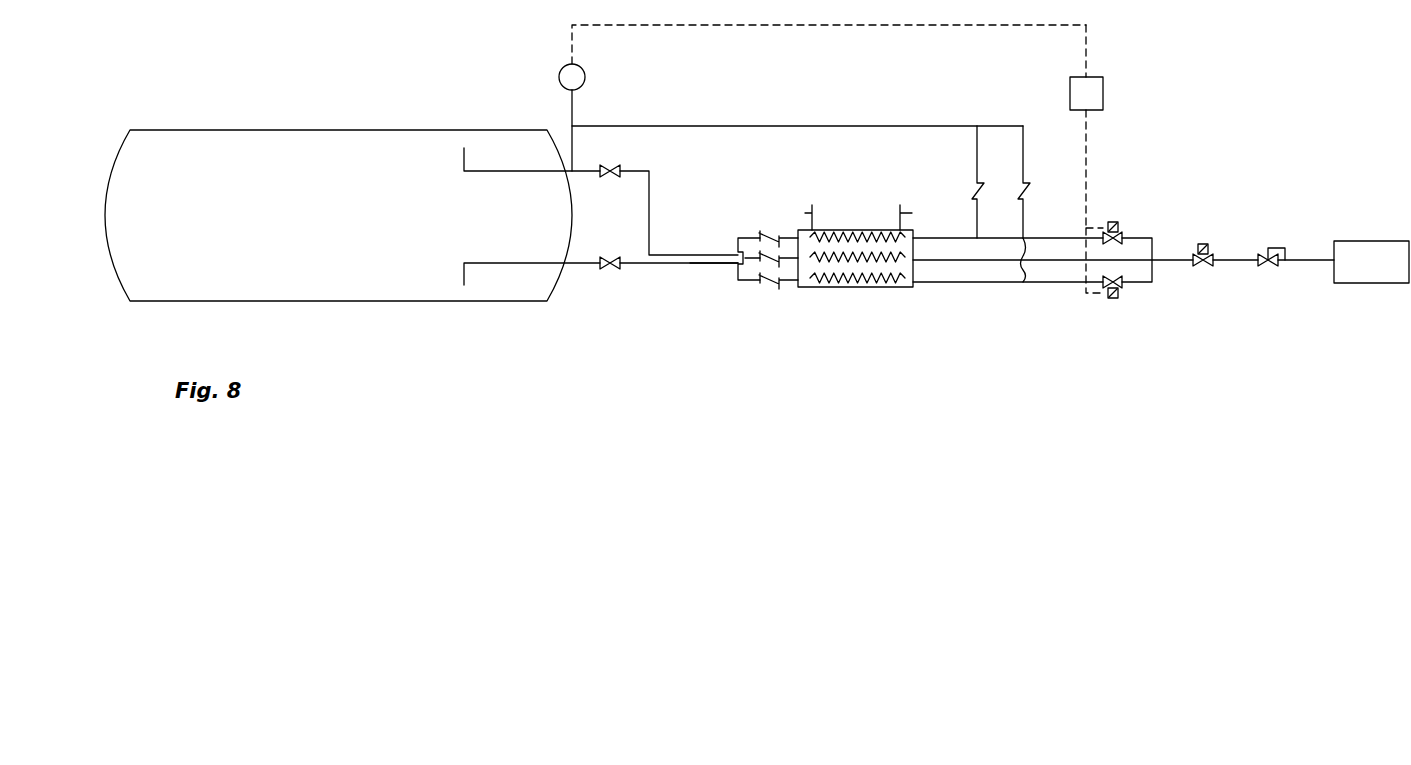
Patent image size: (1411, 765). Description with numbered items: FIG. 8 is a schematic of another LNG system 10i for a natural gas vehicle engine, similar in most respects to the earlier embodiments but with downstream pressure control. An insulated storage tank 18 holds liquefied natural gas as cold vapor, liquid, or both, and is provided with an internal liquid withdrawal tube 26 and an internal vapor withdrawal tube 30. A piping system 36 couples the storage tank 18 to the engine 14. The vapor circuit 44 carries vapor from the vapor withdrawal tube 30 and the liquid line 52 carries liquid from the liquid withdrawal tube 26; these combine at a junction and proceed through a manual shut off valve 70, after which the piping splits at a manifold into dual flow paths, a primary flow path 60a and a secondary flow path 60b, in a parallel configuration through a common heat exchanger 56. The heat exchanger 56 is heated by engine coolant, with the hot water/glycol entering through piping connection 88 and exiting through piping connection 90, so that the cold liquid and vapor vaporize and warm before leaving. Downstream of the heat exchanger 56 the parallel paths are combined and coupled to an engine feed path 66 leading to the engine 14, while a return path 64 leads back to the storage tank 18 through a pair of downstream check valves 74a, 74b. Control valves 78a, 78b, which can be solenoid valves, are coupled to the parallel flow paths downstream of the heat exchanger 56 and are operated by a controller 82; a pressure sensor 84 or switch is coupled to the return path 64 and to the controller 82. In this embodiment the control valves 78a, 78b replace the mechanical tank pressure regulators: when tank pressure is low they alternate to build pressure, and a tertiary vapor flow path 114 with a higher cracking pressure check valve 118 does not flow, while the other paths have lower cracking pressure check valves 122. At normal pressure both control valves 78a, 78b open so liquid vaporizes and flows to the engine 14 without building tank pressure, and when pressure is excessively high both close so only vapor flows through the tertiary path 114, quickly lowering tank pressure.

The system 10i is at (522, 322).
The engine 14 is at (1355, 241).
The storage tank 18 is at (377, 129).
The internal liquid withdrawal tube 26 is at (462, 275).
The internal vapor withdrawal tube 30 is at (460, 153).
The piping system 36 is at (920, 112).
The vapor circuit 44 is at (650, 186).
The liquid line 52 is at (577, 270).
The heat exchanger 56 is at (840, 290).
The primary flow path 60a is at (868, 230).
The secondary flow path 60b is at (880, 288).
The return path 64 is at (832, 125).
The engine feed path 66 is at (1160, 283).
The manual shut off valve 70 is at (699, 266).
The downstream check valve 74a is at (971, 190).
The downstream check valve 74b is at (1034, 192).
The control valve 78a is at (1112, 222).
The control valve 78b is at (1113, 299).
The controller 82 is at (1104, 92).
The pressure sensor 84 is at (558, 77).
The piping connection 88 is at (805, 213).
The piping connection 90 is at (912, 213).
The tertiary vapor flow path 114 is at (947, 262).
The higher cracking pressure check valve 118 is at (757, 268).
The lower cracking pressure check valves 122 is at (778, 236).